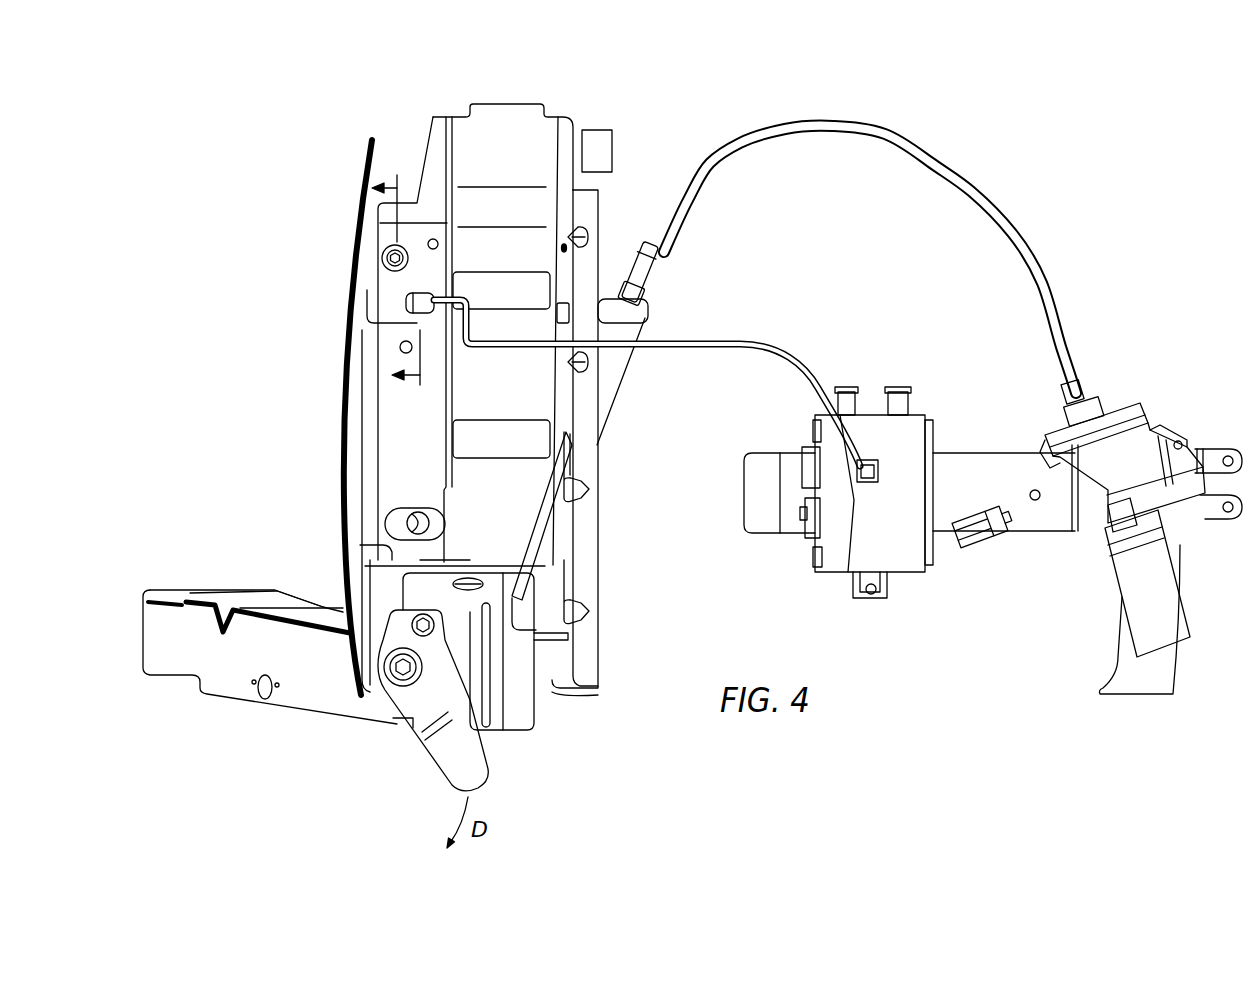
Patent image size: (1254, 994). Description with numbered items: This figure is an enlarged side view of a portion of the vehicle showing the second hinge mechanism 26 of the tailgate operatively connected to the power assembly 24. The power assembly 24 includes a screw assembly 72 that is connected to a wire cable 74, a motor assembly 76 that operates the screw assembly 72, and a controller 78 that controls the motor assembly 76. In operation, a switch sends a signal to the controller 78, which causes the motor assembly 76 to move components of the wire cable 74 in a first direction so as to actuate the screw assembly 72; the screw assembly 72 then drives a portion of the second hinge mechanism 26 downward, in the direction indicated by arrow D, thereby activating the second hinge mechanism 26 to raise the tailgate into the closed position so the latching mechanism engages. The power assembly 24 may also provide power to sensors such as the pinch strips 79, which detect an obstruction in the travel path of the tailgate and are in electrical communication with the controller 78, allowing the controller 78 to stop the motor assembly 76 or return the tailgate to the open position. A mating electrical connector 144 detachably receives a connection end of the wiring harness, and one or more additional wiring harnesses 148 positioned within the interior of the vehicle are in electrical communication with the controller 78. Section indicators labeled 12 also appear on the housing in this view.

The section line 12 is at (400, 282).
The power assembly 24 is at (1003, 158).
The second hinge mechanism 26 is at (400, 770).
The screw assembly 72 is at (635, 383).
The wire cable 74 is at (868, 137).
The motor assembly 76 is at (1170, 410).
The controller 78 is at (913, 583).
The pinch strips 79 is at (352, 382).
The mating electrical connector 144 is at (418, 300).
The additional wiring harnesses 148 is at (775, 348).